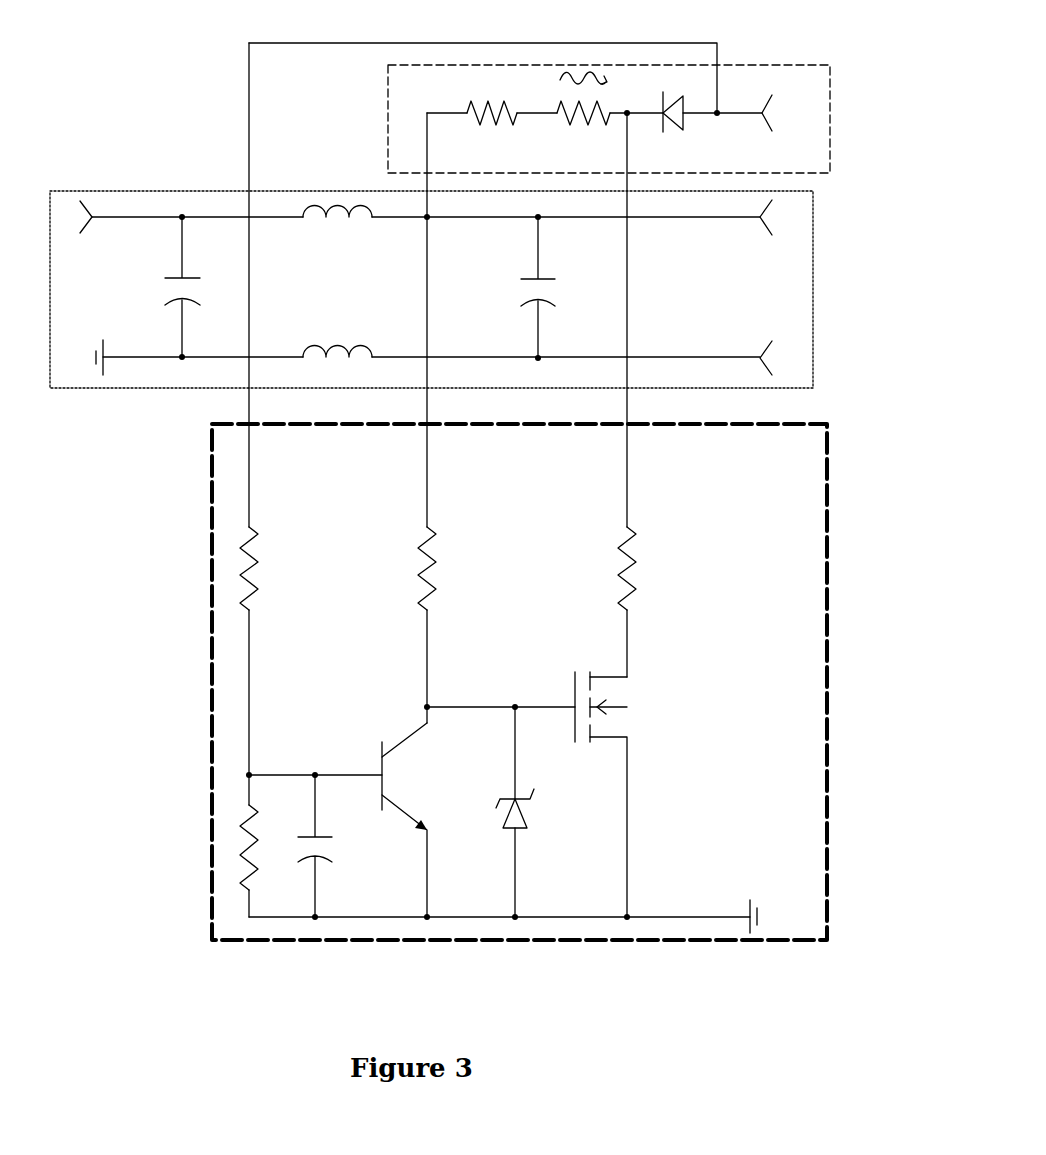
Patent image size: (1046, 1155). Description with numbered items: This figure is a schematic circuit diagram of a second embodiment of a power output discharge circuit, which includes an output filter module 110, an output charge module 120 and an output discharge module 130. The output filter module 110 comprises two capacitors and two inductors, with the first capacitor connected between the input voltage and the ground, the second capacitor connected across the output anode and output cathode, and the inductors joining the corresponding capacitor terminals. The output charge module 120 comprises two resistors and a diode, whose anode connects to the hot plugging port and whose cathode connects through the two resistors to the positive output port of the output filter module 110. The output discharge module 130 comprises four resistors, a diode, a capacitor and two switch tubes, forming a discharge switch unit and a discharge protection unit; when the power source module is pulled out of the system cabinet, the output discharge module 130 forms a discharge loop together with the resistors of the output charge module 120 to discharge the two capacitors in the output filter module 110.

The output filter module 110 is at (208, 179).
The output charge module 120 is at (792, 50).
The output discharge module 130 is at (638, 956).